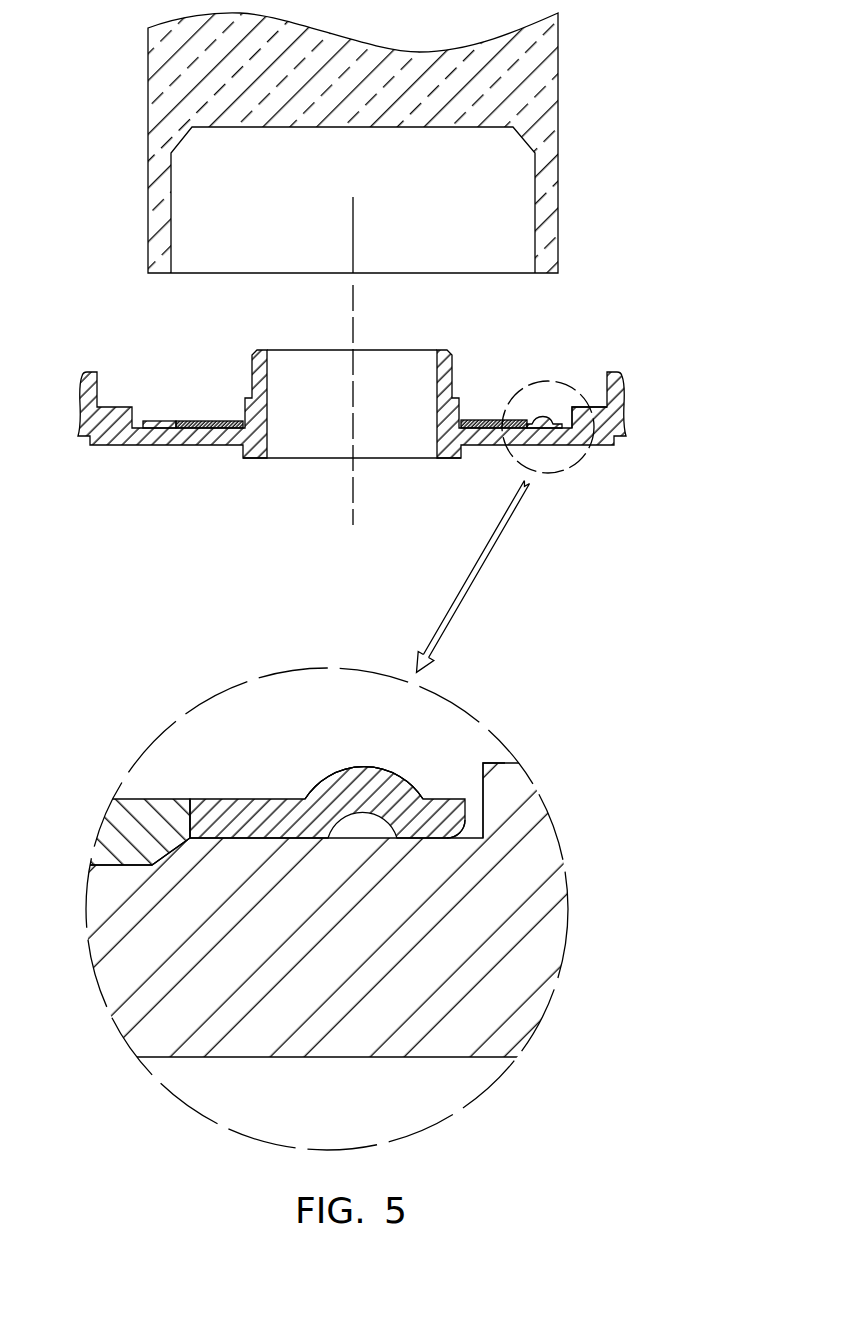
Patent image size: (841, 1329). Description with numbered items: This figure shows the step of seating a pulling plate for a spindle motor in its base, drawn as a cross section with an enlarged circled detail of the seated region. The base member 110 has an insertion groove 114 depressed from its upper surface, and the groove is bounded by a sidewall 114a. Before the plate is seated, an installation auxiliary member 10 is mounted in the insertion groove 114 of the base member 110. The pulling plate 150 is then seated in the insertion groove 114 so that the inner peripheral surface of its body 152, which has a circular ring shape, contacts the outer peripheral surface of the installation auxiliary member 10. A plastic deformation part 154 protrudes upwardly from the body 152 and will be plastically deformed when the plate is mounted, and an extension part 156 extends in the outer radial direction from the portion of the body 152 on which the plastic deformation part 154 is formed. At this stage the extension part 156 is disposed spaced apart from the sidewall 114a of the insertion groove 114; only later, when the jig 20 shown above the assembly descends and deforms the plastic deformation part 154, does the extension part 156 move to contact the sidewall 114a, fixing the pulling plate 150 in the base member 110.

The jig 20 is at (542, 97).
The installation auxiliary member 10 is at (127, 798).
The base member 110 is at (510, 946).
The insertion groove 114 is at (188, 411).
The sidewall 114a is at (575, 405).
The pulling plate 150 is at (412, 764).
The body 152 is at (233, 818).
The plastic deformation part 154 is at (362, 782).
The extension part 156 is at (458, 806).